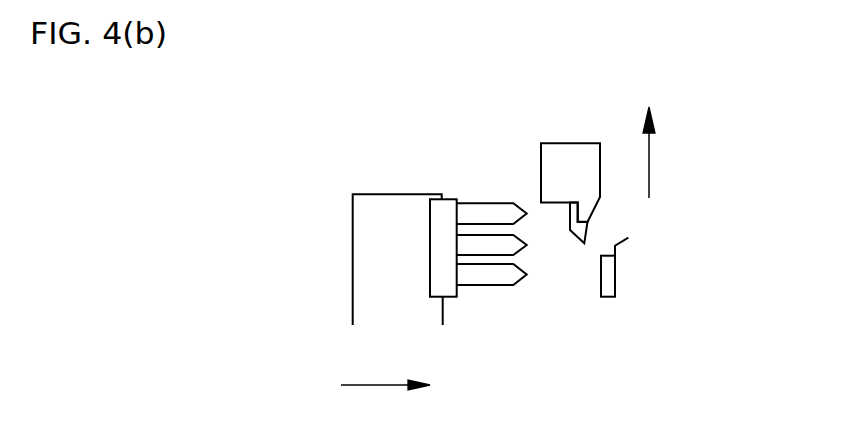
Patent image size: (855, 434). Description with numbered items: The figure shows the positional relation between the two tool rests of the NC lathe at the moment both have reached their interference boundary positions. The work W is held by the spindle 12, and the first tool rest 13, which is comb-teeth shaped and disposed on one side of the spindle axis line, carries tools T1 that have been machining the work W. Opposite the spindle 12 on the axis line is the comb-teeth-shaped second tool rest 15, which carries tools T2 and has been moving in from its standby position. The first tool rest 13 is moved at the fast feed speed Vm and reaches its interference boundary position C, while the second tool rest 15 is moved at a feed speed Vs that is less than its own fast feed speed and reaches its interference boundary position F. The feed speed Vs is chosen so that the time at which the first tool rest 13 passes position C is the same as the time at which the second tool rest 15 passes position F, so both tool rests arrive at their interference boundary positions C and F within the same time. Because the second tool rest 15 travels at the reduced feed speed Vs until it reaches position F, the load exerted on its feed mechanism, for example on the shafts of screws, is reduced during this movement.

The second tool rest 15 is at (368, 178).
The second tool T2 is at (477, 206).
The first tool rest 13 is at (531, 157).
The interference boundary position C is at (583, 182).
The tools T1 is at (587, 229).
The work W is at (587, 316).
The spindle 12 is at (615, 297).
The fast feed speed Vm is at (677, 152).
The feed speed Vs is at (385, 399).
The interference boundary position F is at (388, 339).